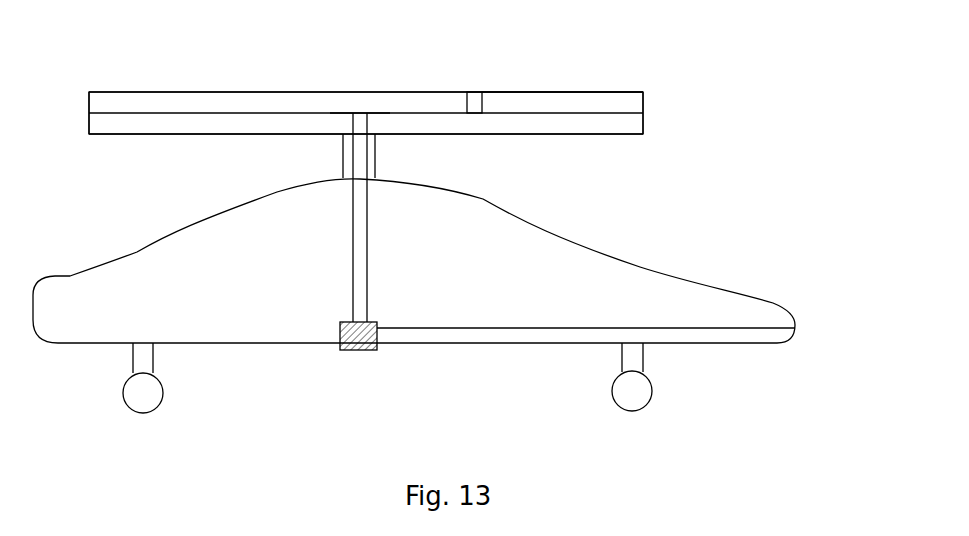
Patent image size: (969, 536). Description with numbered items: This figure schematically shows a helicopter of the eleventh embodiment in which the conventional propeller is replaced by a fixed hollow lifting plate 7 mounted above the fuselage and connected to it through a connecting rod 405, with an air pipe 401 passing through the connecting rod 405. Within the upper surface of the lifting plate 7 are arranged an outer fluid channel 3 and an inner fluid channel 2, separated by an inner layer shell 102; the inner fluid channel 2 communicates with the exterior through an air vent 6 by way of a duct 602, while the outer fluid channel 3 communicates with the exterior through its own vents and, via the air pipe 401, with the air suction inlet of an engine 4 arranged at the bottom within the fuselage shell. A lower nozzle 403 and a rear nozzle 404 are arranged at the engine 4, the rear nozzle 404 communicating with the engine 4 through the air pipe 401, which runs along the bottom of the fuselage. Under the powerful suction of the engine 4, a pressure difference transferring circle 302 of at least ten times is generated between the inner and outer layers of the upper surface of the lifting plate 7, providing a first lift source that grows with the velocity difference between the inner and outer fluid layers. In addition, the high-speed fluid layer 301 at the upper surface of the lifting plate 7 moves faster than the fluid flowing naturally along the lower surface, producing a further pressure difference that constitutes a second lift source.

The lifting plate 7 is at (99, 92).
The pressure difference transferring circle 302 is at (157, 92).
The outer fluid channel 3 is at (243, 108).
The inner fluid channel 2 is at (297, 130).
The inner layer shell 102 is at (341, 112).
The connecting rod 405 is at (368, 163).
The duct 602 is at (473, 104).
The air vent 6 is at (525, 92).
The high-speed fluid layer 301 is at (550, 92).
The air pipe 401 is at (362, 283).
The rear nozzle 404 is at (865, 308).
The engine 4 is at (350, 342).
The lower nozzle 403 is at (360, 348).